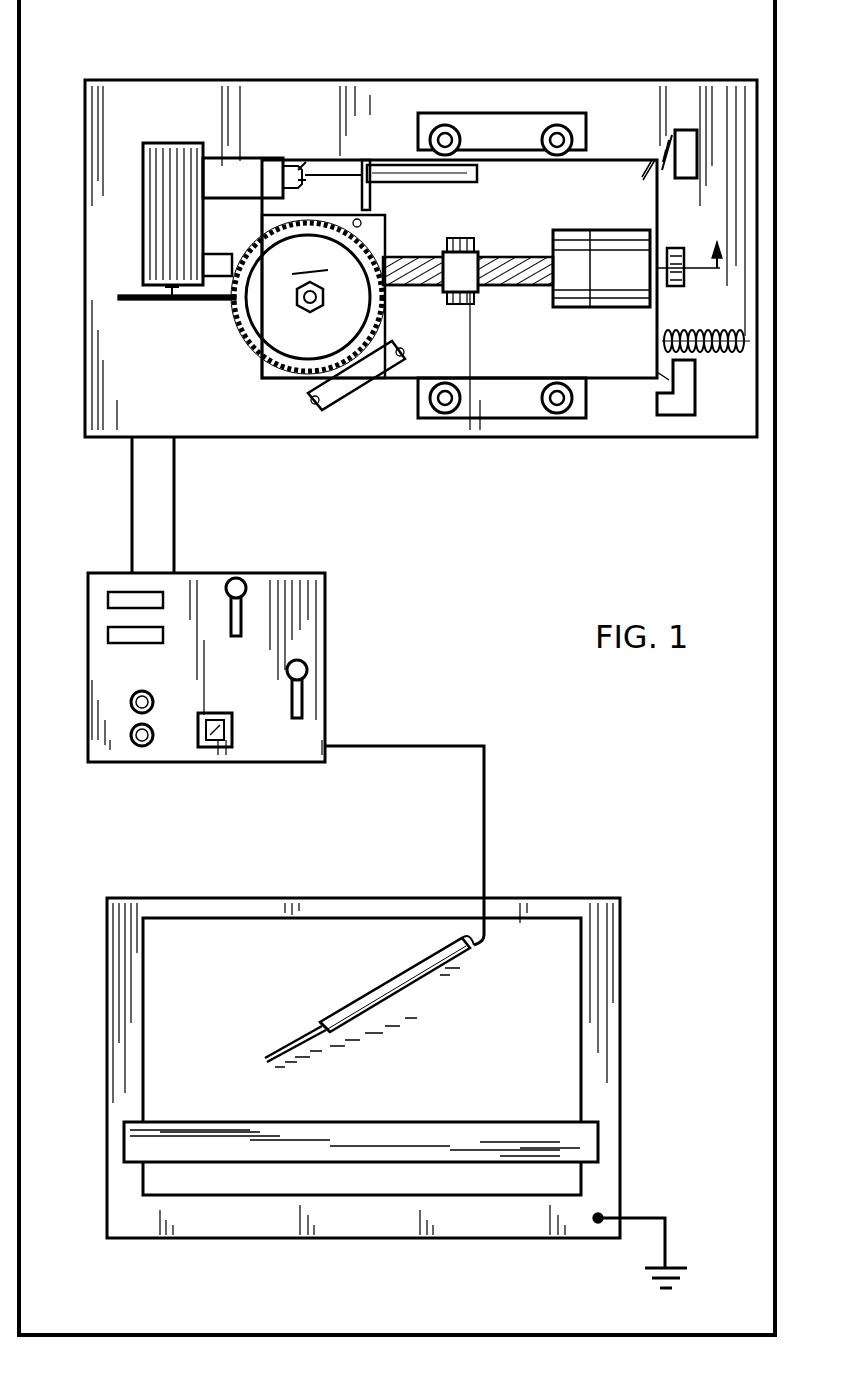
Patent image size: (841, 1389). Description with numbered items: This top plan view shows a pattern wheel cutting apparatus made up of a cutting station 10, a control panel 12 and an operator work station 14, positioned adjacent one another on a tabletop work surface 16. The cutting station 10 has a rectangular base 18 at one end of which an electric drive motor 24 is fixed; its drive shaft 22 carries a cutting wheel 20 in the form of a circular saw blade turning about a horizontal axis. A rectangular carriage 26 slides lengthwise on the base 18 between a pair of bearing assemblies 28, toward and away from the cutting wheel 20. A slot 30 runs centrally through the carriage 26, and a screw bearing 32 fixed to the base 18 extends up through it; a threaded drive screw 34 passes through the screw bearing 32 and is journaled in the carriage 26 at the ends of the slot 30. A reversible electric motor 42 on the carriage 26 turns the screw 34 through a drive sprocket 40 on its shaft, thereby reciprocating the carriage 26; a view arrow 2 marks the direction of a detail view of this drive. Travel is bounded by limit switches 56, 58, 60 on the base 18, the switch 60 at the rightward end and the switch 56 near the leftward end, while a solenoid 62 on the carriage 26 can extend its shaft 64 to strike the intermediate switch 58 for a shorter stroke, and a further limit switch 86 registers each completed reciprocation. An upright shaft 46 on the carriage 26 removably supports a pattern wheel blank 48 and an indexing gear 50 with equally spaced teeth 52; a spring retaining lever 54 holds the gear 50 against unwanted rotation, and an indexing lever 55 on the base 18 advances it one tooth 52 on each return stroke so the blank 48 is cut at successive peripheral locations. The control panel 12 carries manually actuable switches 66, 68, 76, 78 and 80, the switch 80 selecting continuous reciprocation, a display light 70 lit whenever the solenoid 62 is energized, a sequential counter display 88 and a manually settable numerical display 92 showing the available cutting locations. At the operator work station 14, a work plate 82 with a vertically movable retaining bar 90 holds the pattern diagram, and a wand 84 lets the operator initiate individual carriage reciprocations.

The section line 2- 2 is at (715, 244).
The cutting station 10 is at (226, 78).
The control panel 12 is at (333, 597).
The operator work station 14 is at (627, 955).
The work surface 16 is at (775, 537).
The rectangular base 18 is at (252, 408).
The cutting wheel 20 is at (135, 302).
The drive shaft 22 is at (160, 290).
The electric drive motor 24 is at (158, 196).
The carriage 26 is at (605, 358).
The bearing assemblies 28 is at (497, 128).
The slot 30 is at (500, 252).
The screw bearing 32 is at (452, 262).
The threaded drive screw 34 is at (528, 290).
The drive sprocket 40 is at (675, 290).
The reversible electric motor 42 is at (610, 250).
The shaft 46 is at (305, 300).
The pattern wheel blank 48 is at (310, 259).
The indexing gear 50 is at (260, 335).
The teeth 52 is at (272, 372).
The spring retaining lever 54 is at (355, 245).
The indexing lever 55 is at (382, 341).
The limit switch 56 is at (220, 262).
The limit switch 58 is at (290, 175).
The limit switch 60 is at (686, 150).
The solenoid 62 is at (425, 180).
The reciprocable shaft 64 is at (340, 172).
The manually actuable switch 66 is at (352, 689).
The manually actuable switch 68 is at (135, 748).
The display light 70 is at (200, 748).
The manually actuable switch 76 is at (302, 702).
The manually actuable switch 78 is at (130, 702).
The switch 80 is at (240, 625).
The work plate 82 is at (604, 1095).
The wand 84 is at (330, 1032).
The limit switch 86 is at (682, 385).
The counter display 88 is at (107, 633).
The linear retaining bar 90 is at (437, 1140).
The numerical display 92 is at (107, 600).